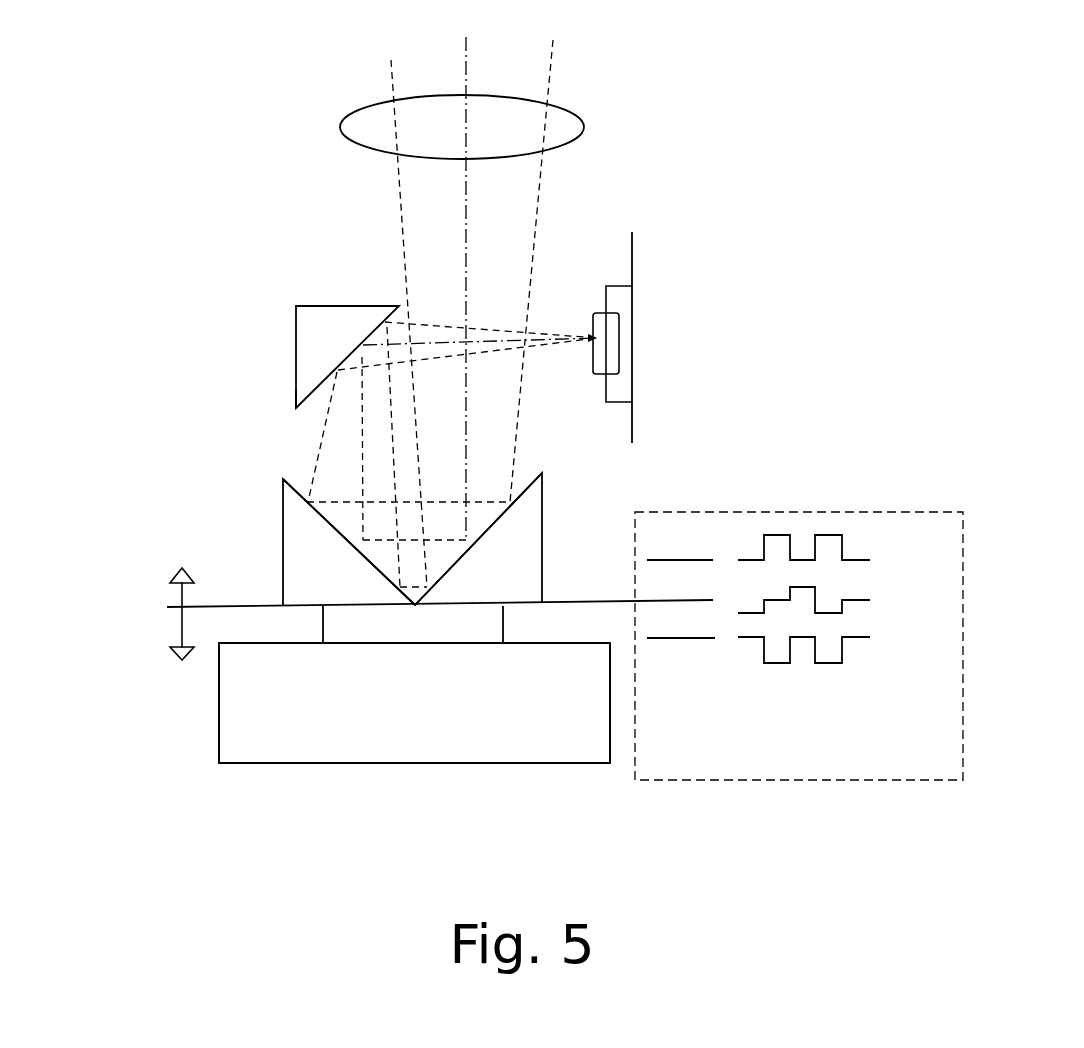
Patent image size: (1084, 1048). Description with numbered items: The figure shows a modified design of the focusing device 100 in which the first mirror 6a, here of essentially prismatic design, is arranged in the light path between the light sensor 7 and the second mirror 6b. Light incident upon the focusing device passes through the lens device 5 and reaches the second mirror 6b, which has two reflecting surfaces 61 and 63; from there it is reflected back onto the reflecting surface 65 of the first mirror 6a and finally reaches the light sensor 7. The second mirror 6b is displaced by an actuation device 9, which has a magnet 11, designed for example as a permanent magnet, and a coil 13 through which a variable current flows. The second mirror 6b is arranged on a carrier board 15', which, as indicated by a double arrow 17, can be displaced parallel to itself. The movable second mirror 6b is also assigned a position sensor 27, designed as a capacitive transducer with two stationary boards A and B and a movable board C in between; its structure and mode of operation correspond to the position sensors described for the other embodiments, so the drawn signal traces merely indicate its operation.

The lens device 5 is at (578, 121).
The first mirror 6a is at (310, 335).
The second mirror 6b is at (297, 535).
The reflecting surface 61 is at (296, 481).
The reflecting surface 63 is at (527, 475).
The reflecting surface 65 is at (310, 405).
The light sensor 7 is at (638, 323).
The actuation device 9 is at (200, 752).
The magnet 11 is at (275, 753).
The coil 13 is at (503, 618).
The carrier board 15' is at (440, 571).
The double arrow 17 is at (180, 592).
The position sensor 27 is at (812, 502).
The focusing device 100 is at (227, 436).